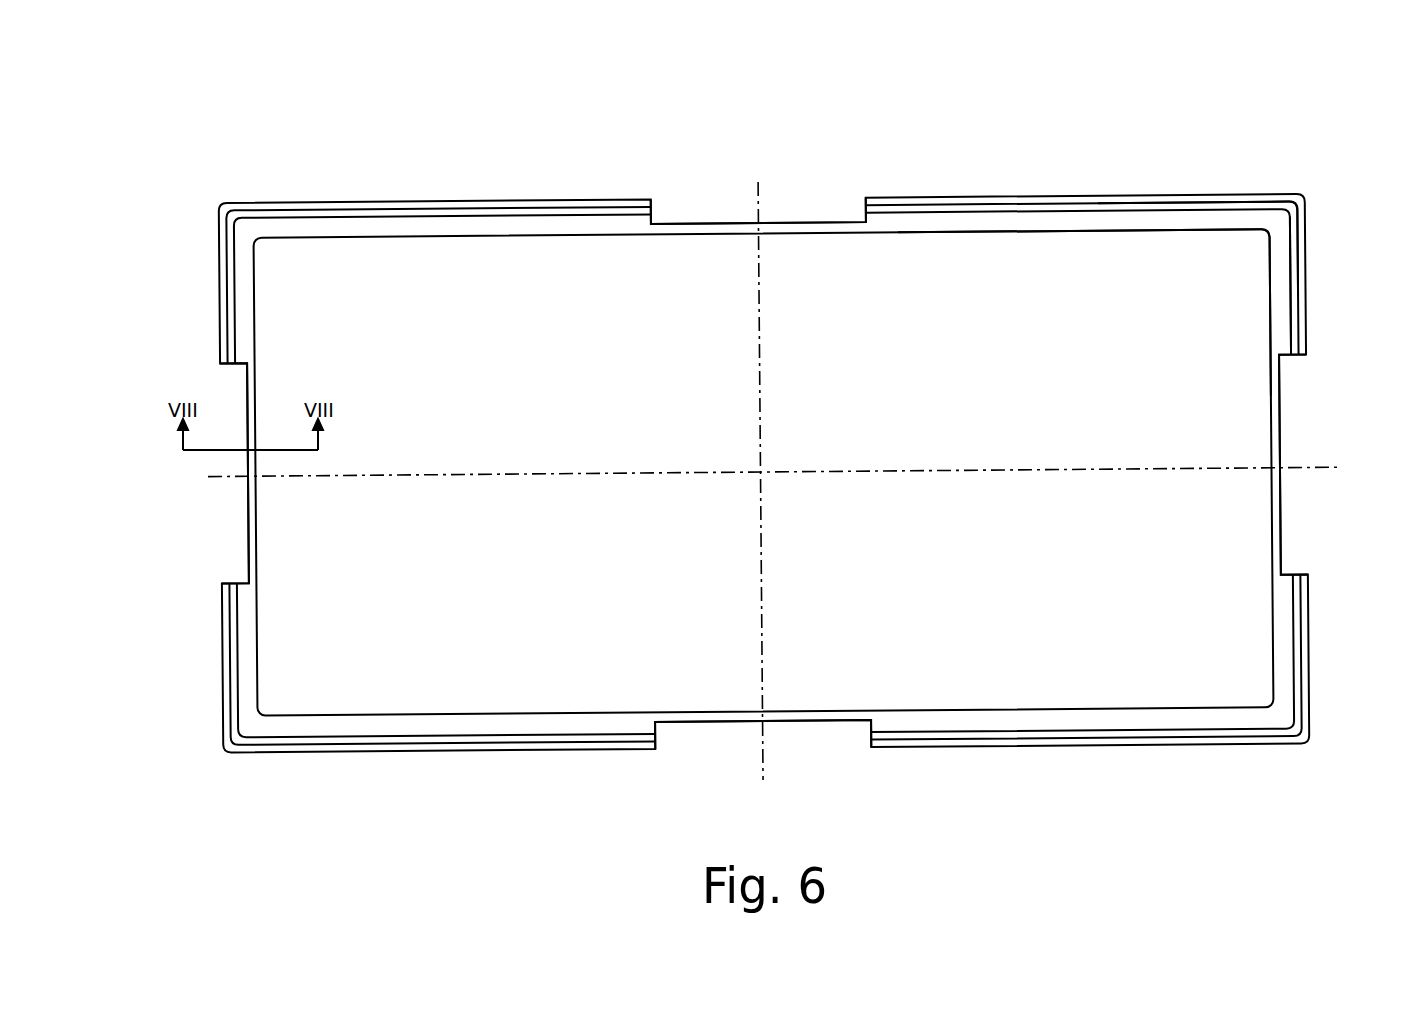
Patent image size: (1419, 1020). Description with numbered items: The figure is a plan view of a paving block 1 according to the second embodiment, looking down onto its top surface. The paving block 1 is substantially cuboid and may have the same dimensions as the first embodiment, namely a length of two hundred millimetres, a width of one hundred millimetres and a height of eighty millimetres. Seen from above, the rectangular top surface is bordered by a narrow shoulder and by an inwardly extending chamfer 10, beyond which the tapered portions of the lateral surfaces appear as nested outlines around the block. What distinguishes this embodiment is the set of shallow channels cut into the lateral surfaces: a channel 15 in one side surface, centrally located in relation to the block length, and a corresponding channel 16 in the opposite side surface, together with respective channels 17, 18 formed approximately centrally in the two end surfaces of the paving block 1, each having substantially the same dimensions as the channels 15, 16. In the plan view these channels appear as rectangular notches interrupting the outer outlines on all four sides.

The paving block 1 is at (774, 414).
The chamfer 10 is at (1275, 330).
The channel 15 is at (842, 735).
The channel 16 is at (698, 210).
The channel 17 is at (222, 365).
The channel 18 is at (1284, 573).